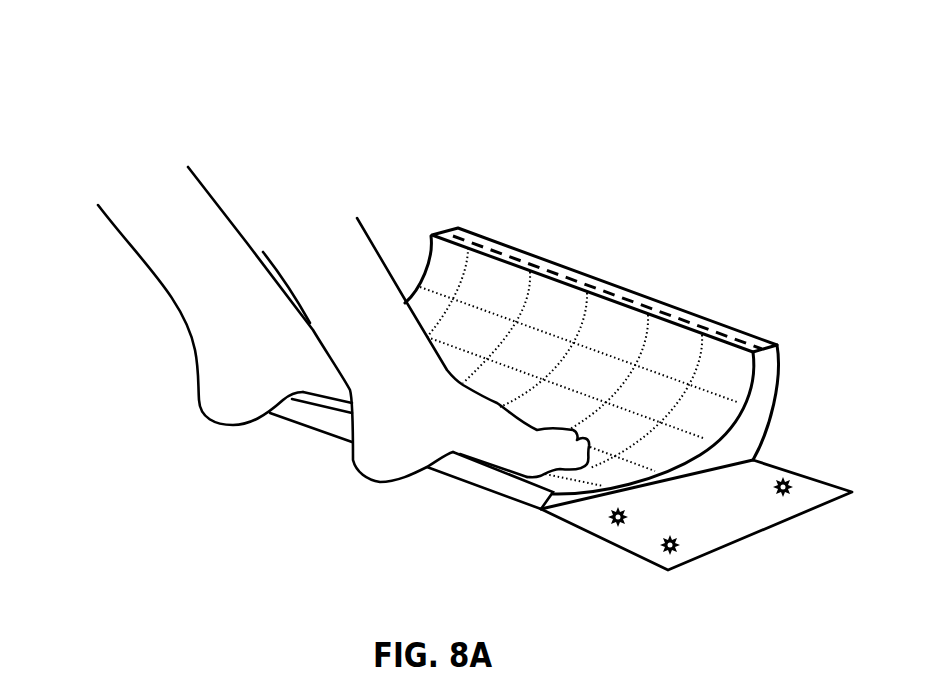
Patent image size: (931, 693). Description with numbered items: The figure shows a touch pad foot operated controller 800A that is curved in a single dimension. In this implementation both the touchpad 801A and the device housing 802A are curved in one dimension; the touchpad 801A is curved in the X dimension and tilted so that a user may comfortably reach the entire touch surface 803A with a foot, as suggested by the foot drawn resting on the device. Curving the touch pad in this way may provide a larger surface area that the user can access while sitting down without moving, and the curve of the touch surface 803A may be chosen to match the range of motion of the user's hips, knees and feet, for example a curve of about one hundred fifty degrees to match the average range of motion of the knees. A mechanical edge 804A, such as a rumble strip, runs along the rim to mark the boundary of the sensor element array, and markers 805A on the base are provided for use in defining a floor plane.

The touch pad foot operated controller 800A is at (152, 67).
The touchpad 801A is at (431, 237).
The device housing 802A is at (657, 297).
The touch surface 803A is at (581, 317).
The mechanical edge 804A is at (523, 258).
The markers 805A is at (674, 539).